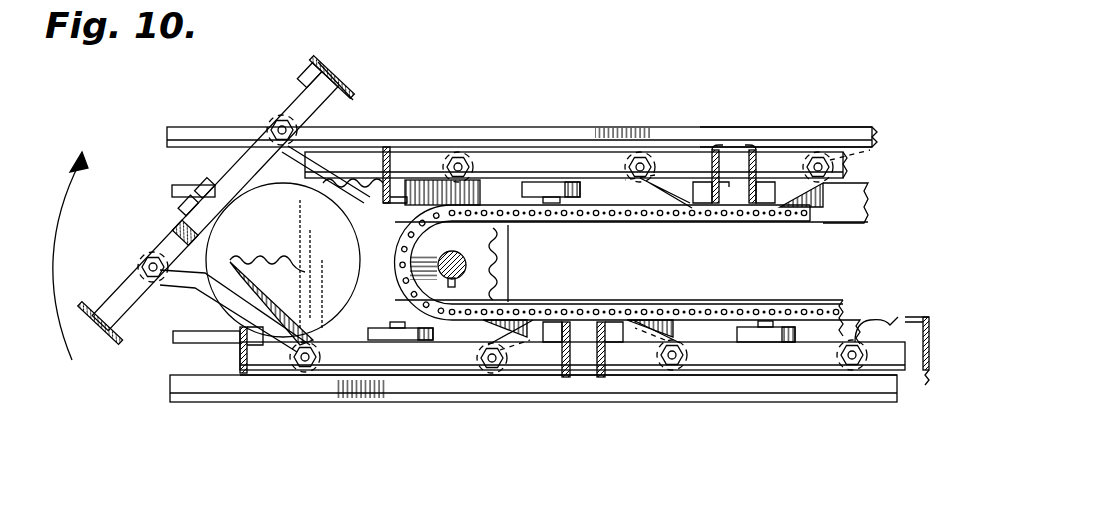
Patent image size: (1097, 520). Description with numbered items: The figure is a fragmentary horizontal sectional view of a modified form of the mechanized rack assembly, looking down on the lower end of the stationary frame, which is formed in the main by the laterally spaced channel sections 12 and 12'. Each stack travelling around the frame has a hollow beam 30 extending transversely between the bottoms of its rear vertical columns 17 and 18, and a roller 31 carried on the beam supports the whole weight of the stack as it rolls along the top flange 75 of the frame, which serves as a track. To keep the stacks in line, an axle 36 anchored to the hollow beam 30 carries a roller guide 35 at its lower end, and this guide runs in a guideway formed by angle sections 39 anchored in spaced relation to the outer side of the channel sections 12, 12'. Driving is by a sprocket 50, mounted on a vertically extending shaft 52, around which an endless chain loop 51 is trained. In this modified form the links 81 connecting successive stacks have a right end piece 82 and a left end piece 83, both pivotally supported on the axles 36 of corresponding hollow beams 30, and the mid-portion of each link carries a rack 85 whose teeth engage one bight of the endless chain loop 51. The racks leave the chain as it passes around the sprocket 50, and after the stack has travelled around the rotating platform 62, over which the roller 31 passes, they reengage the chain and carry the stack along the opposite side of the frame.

The channel section 12 is at (643, 291).
The channel section 12' is at (656, 183).
The rear vertical column 17 is at (747, 147).
The rear vertical column 18 is at (318, 62).
The hollow beam 30 is at (242, 172).
The roller 31 is at (560, 182).
The roller guide 35 is at (268, 124).
The axle 36 is at (282, 126).
The angle section 39 is at (850, 132).
The sprocket 50 is at (500, 275).
The endless chain loop 51 is at (813, 217).
The shaft 52 is at (462, 257).
The rotating platform 62 is at (233, 307).
The top flange 75 is at (597, 190).
The link 81 is at (347, 165).
The right end piece 82 is at (423, 170).
The left end piece 83 is at (352, 105).
The rack 85 is at (358, 190).